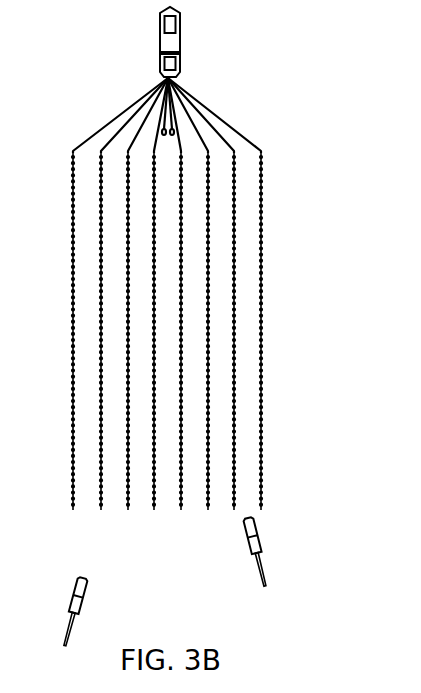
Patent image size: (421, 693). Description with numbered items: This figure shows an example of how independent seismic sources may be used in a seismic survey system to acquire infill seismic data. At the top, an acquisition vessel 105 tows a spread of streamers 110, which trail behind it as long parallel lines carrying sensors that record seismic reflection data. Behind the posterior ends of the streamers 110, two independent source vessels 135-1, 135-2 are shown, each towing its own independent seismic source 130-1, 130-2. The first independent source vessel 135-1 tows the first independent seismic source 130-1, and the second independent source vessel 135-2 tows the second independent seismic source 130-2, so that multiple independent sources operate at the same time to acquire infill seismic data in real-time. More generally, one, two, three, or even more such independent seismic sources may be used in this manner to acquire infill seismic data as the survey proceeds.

The acquisition vessel 105 is at (181, 30).
The streamers 110 is at (262, 476).
The independent seismic source 130-1 is at (83, 605).
The independent source vessel 135-1 is at (74, 596).
The independent seismic source 130-2 is at (250, 545).
The independent source vessel 135-2 is at (255, 534).